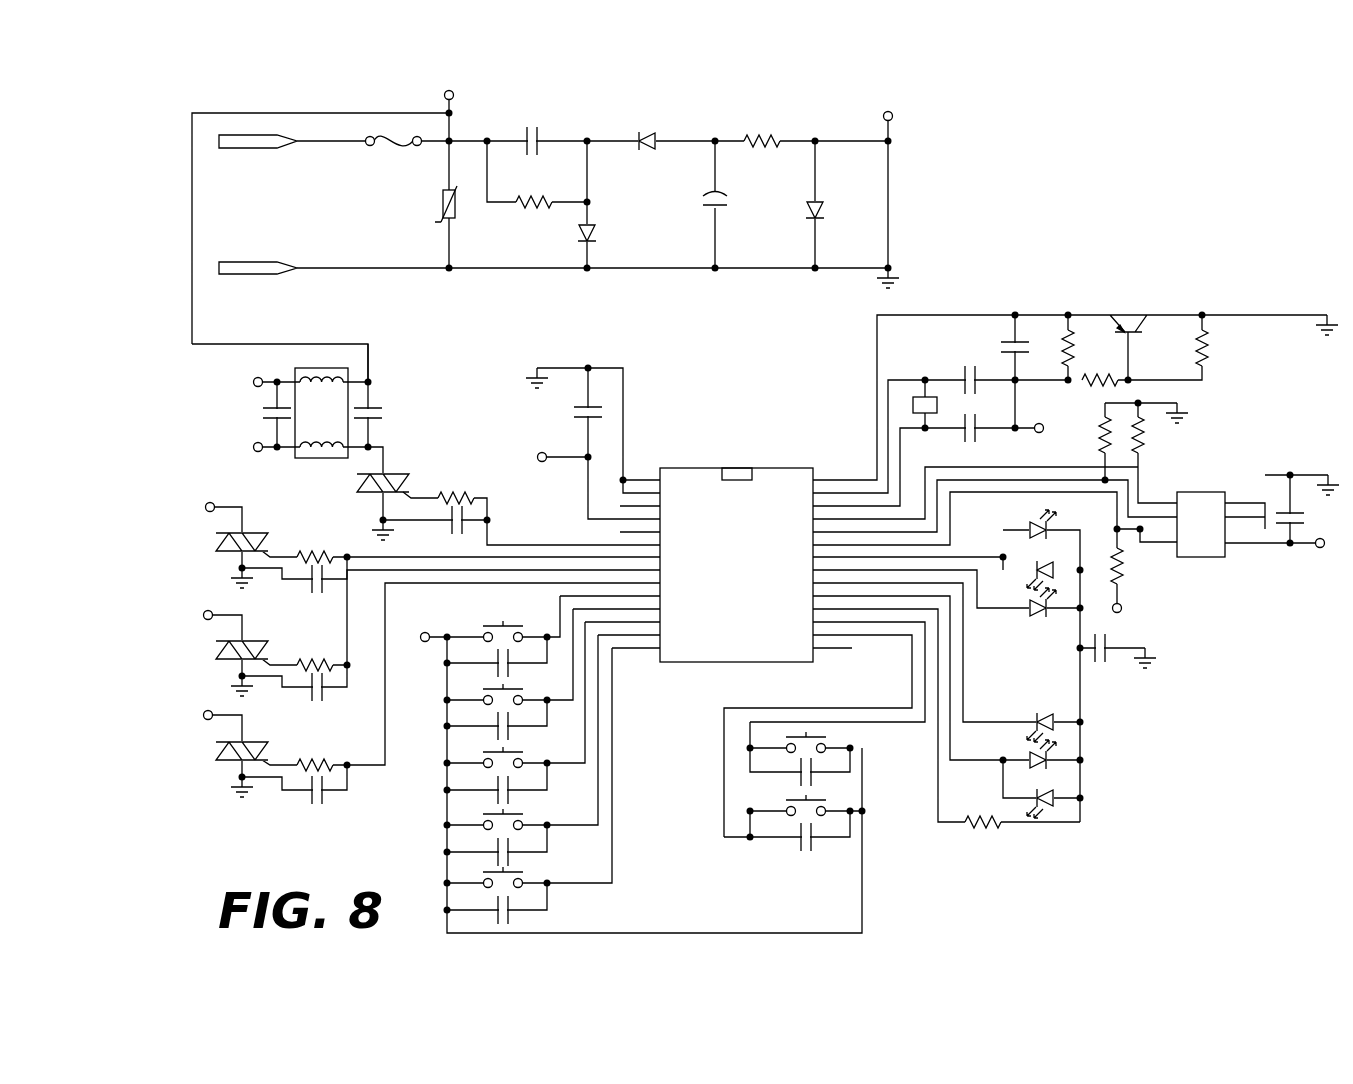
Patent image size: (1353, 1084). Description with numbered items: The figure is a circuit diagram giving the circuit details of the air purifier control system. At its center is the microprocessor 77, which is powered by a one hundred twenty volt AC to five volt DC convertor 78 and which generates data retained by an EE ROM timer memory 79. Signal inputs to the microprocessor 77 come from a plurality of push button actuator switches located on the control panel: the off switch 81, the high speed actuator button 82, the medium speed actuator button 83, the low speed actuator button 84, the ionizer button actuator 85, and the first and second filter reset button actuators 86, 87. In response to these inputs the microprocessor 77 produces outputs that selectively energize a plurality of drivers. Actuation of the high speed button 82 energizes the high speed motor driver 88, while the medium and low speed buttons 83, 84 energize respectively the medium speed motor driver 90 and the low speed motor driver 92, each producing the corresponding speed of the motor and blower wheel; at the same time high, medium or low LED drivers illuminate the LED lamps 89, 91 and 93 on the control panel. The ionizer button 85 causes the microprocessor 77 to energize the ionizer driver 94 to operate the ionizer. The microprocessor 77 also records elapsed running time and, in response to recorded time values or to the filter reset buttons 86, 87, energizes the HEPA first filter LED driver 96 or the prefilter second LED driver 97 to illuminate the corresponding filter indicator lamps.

The microprocessor 77 is at (765, 468).
The 120 volt AC to 5 volt DC convertor 78 is at (522, 284).
The EE ROM timer memory 79 is at (1238, 480).
The off switch 81 is at (470, 626).
The high speed actuator button 82 is at (440, 710).
The medium speed actuator button 83 is at (440, 773).
The low speed actuator button 84 is at (440, 835).
The ionizer button actuator 85 is at (440, 893).
The first filter reset button actuator 86 is at (872, 818).
The second filter reset button actuator 87 is at (872, 755).
The high speed motor driver 88 is at (298, 528).
The high speed LED lamp 89 is at (1025, 527).
The medium speed motor driver 90 is at (208, 670).
The medium speed LED lamp 91 is at (1065, 565).
The low speed motor driver 92 is at (208, 780).
The low speed LED lamp 93 is at (1033, 632).
The ionizer driver 94 is at (1098, 713).
The HEPA first filter LED driver 96 is at (1098, 753).
The prefilter second LED driver 97 is at (1098, 793).